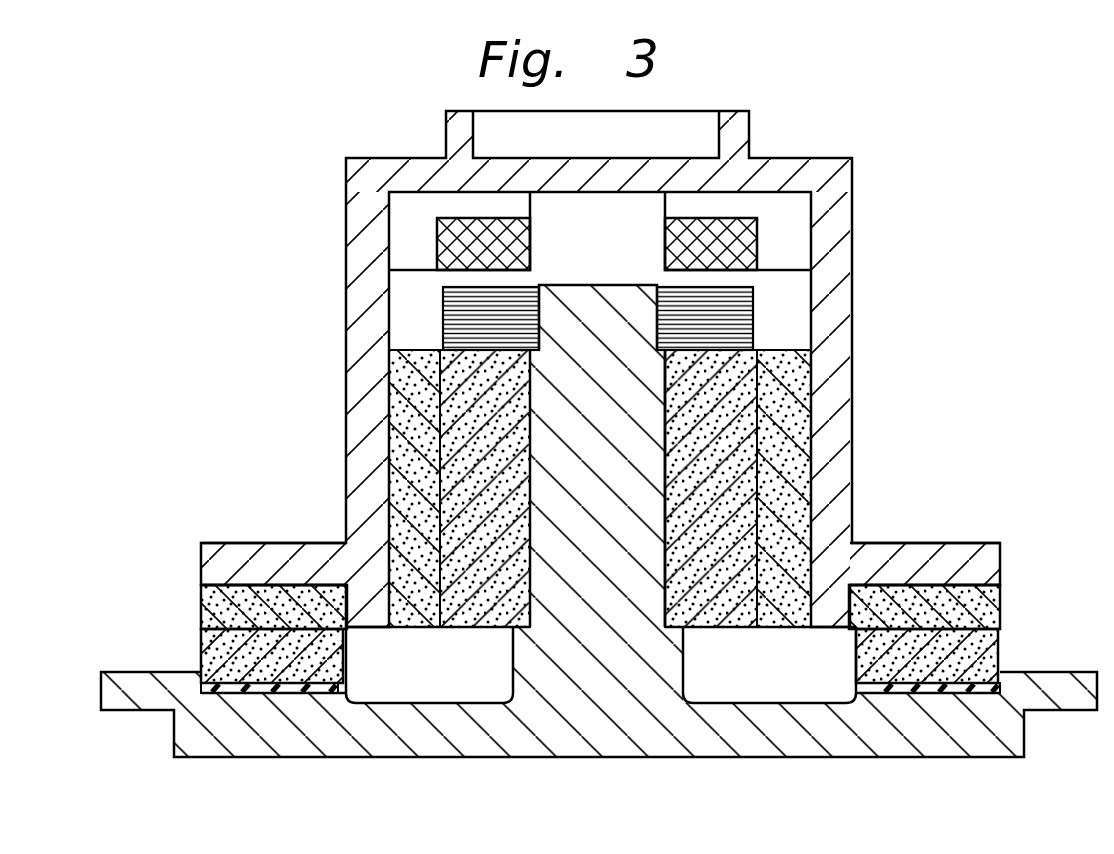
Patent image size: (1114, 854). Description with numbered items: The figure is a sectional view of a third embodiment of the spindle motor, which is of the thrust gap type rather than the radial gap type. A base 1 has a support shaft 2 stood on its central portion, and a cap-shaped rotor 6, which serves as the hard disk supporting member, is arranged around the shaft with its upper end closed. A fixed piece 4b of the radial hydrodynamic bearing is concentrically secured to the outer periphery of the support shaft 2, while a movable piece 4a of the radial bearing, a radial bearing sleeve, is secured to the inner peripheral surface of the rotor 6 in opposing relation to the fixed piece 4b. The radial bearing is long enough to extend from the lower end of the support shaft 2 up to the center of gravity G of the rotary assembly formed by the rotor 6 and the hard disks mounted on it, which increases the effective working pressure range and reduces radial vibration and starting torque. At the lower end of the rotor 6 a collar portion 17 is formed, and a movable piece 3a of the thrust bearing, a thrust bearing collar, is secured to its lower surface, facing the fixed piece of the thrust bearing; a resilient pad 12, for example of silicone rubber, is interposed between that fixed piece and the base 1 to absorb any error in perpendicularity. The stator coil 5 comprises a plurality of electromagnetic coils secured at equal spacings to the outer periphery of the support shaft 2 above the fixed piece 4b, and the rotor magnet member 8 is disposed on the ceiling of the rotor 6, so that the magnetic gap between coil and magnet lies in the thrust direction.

The base 1 is at (383, 742).
The support shaft 2 is at (598, 550).
The movable piece of thrust bearing 3a is at (977, 613).
The movable piece of radial bearing 4a is at (782, 467).
The fixed piece of radial bearing 4b is at (733, 503).
The stator coil 5 is at (752, 332).
The rotor 6 is at (396, 166).
The rotor magnet member 8 is at (750, 250).
The resilient pad 12 is at (932, 690).
The collar portion 17 is at (983, 563).
The center of gravity G is at (612, 428).